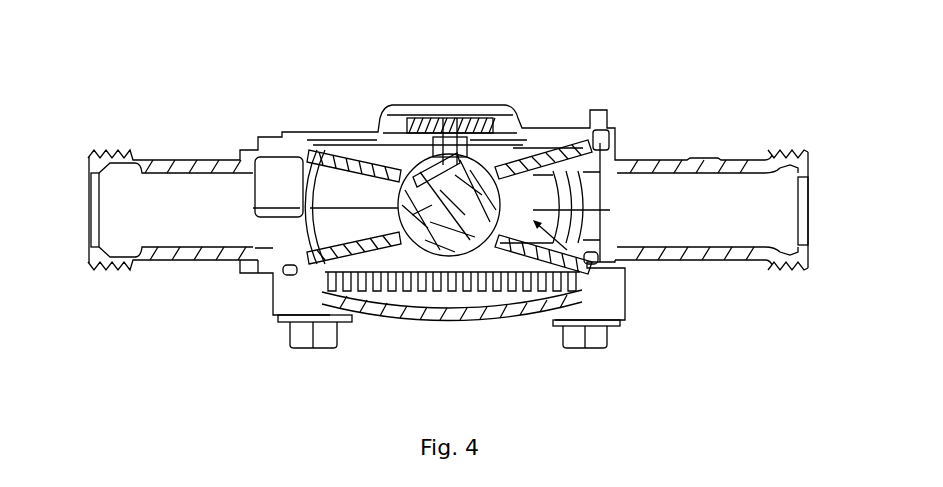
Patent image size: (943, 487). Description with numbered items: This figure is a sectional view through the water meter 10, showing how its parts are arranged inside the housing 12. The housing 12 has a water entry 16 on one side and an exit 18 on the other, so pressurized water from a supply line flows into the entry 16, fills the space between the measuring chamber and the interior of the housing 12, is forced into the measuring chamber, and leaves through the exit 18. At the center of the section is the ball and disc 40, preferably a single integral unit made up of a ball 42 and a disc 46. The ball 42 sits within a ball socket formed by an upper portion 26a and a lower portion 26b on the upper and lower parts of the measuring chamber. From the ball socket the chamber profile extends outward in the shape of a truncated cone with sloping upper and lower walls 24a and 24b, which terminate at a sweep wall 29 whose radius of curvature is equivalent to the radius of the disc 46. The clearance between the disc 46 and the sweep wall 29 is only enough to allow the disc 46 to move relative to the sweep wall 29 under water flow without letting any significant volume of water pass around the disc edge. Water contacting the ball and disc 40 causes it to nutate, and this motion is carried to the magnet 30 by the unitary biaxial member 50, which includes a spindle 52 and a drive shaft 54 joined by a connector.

The meter 10 is at (294, 101).
The housing 12 is at (708, 160).
The water entry 16 is at (95, 193).
The exit 18 is at (803, 207).
The sloping upper wall 24a is at (388, 188).
The sloping lower wall 24b is at (388, 228).
The upper portion of ball socket 26a is at (498, 145).
The lower portion of ball socket 26b is at (420, 232).
The sweep wall 29 is at (280, 255).
The magnet 30 is at (470, 117).
The ball and disc 40 is at (592, 270).
The ball 42 is at (407, 207).
The disc 46 is at (612, 118).
The unitary biaxial member 50 is at (433, 173).
The spindle 52 is at (472, 252).
The drive shaft 54 is at (448, 155).